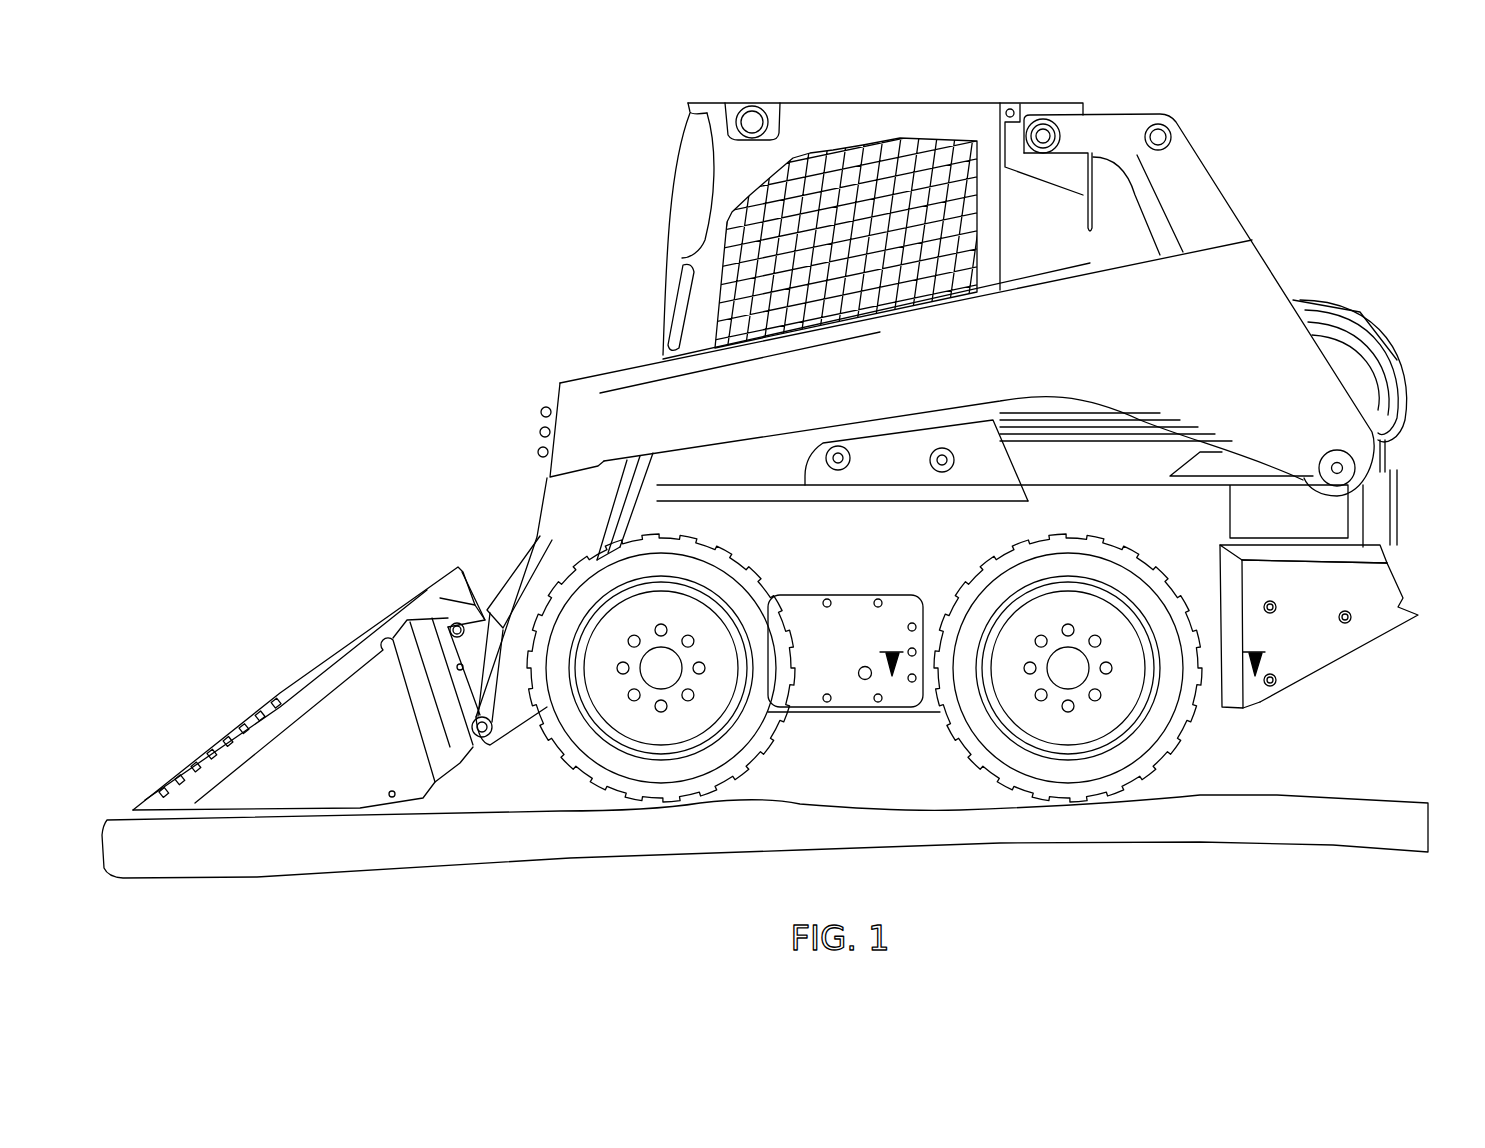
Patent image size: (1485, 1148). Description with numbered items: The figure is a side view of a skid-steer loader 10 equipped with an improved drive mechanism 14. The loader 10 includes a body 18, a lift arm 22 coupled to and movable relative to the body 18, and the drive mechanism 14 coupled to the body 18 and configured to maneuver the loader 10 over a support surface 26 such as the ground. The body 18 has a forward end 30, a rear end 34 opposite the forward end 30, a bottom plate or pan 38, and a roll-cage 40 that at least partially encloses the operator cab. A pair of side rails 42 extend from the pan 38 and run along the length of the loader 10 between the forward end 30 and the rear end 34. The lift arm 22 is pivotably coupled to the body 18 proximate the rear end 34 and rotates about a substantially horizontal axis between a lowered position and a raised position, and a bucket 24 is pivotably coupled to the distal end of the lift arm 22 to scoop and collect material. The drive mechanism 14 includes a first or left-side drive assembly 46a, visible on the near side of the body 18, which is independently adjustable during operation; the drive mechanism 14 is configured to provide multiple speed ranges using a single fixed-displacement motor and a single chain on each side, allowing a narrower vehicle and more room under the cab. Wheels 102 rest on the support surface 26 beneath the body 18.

The skid-steer loader 10 is at (285, 202).
The drive mechanism 14 is at (845, 692).
The body 18 is at (1339, 660).
The lift arm 22 is at (599, 400).
The bucket 24 is at (303, 682).
The support surface 26 is at (1310, 828).
The forward end 30 is at (643, 530).
The rear end 34 is at (1408, 615).
The bottom plate or pan 38 is at (1208, 703).
The roll-cage 40 is at (936, 116).
The side rails 42 is at (926, 692).
The first or left-side drive assembly 46a is at (802, 610).
The wheels 102 is at (613, 803).